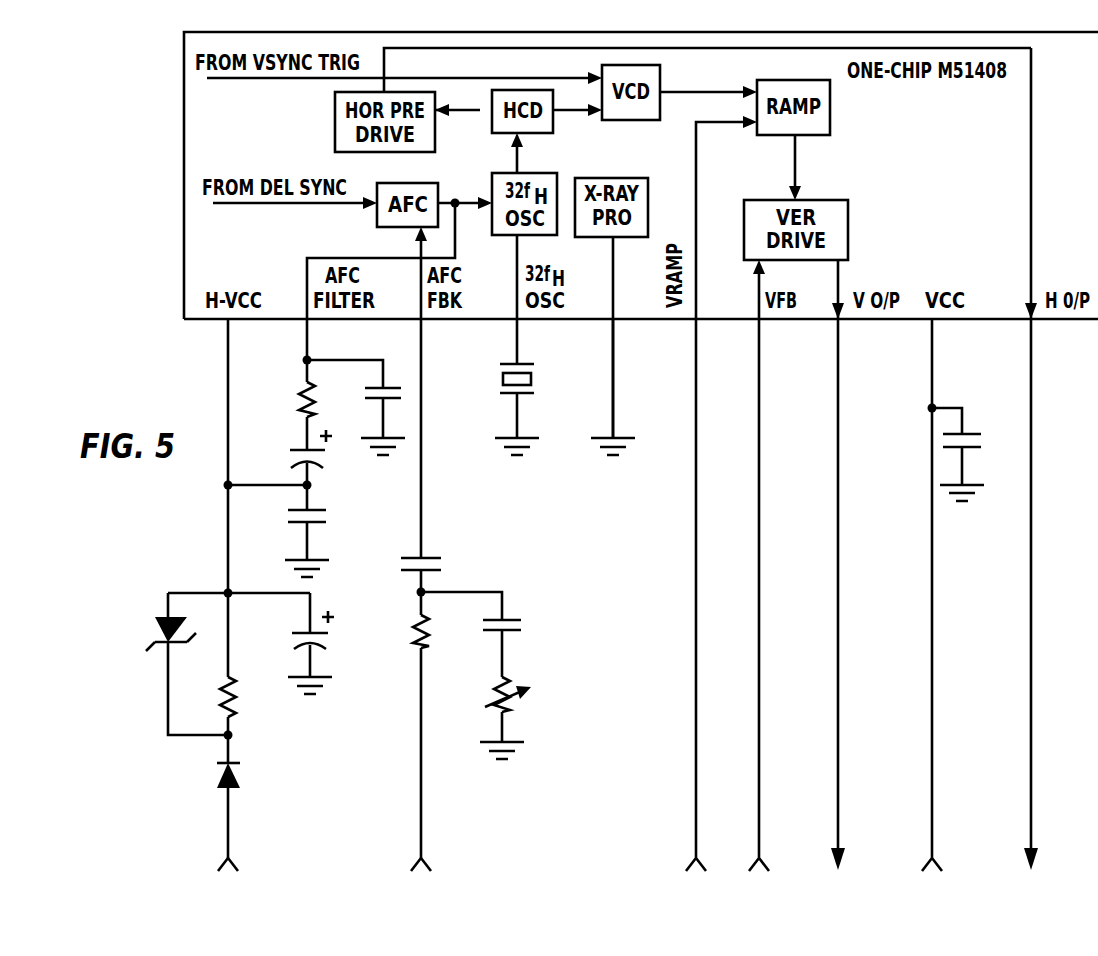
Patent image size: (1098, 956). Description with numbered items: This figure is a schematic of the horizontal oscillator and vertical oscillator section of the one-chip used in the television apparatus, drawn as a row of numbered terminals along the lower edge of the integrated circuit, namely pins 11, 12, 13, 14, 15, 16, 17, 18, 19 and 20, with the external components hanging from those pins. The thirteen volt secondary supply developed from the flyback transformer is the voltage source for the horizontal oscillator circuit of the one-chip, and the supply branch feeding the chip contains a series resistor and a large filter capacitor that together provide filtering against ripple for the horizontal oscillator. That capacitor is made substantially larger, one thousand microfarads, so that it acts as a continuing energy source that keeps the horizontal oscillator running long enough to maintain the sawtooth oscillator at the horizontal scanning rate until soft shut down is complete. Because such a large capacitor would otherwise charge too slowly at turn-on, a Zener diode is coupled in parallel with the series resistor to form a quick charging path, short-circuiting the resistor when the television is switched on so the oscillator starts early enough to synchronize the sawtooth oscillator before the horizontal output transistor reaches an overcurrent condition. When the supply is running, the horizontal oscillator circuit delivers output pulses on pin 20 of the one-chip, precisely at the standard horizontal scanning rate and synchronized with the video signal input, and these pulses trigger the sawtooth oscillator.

The H-VCC pin (13V supply input with DP47 zener, RP06, DP40, CI21) 11 is at (221, 595).
The AFC filter pin (RI05, CI12, CI10, CI11 network) 12 is at (316, 448).
The AFC feedback pin (CP35, RP43, CP34, PP02 heater network) 13 is at (435, 564).
The 32fH oscillator pin (QL01 ceramic resonator) 14 is at (489, 390).
The X-ray protection pin (grounded) 15 is at (609, 387).
The VRAMP pin 16 is at (666, 595).
The VFB vertical feedback pin 17 is at (743, 595).
The V O/P vertical output pin 18 is at (816, 594).
The VCC supply pin (CI15 capacitor) 19 is at (948, 595).
The pin of the one-chip 20 is at (1020, 594).